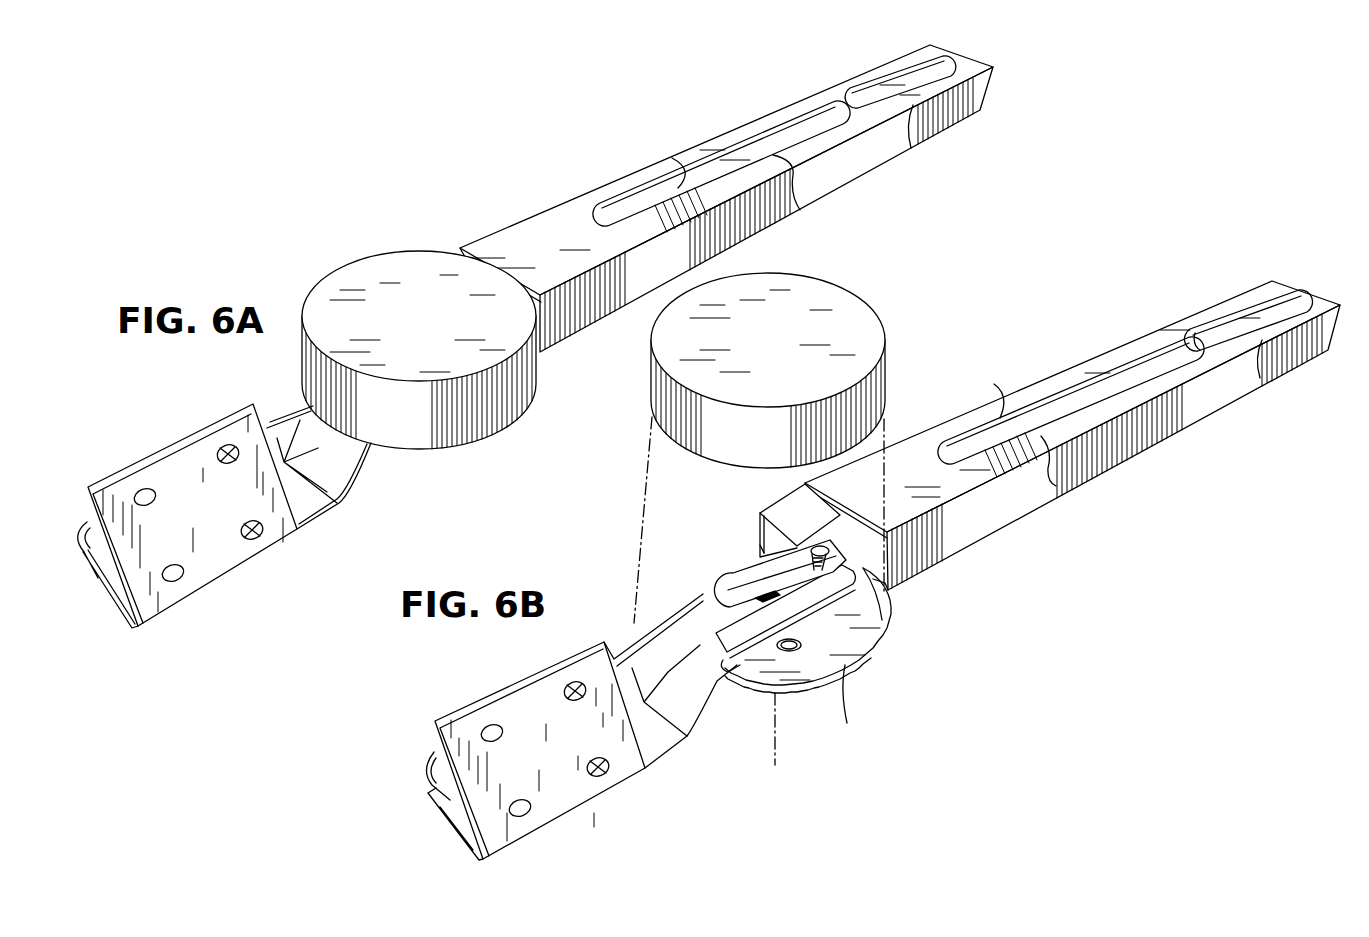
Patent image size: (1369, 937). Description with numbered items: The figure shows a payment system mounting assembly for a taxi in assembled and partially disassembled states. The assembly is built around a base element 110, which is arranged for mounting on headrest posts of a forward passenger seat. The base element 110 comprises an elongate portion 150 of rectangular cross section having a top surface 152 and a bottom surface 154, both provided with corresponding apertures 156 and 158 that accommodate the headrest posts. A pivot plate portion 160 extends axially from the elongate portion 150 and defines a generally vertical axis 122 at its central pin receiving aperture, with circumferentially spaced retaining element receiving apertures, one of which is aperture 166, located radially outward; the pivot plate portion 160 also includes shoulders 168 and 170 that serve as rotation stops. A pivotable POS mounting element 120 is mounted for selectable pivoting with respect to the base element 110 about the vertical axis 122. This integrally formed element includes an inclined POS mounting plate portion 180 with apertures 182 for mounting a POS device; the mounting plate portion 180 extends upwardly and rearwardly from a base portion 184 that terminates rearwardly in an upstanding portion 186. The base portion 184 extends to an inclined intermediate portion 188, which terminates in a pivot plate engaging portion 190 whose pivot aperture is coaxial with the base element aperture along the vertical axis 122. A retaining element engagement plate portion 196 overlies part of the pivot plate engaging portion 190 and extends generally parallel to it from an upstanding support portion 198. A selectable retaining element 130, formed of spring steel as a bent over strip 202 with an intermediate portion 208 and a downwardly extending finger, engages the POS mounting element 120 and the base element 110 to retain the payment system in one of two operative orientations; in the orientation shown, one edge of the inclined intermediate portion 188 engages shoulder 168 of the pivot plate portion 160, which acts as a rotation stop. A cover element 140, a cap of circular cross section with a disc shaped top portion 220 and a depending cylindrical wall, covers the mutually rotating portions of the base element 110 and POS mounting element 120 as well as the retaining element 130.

In FIG. 6A, the base element 110 is at (726, 193).
In FIG. 6B, the base element 110 is at (1072, 461).
In FIG. 6A, the pivotable POS mounting element 120 is at (231, 491).
In FIG. 6B, the pivotable POS mounting element 120 is at (676, 685).
In FIG. 6B, the vertical axis 122 is at (775, 731).
In FIG. 6B, the selectable retaining element 130 is at (785, 552).
In FIG. 6A, the cover element 140 is at (397, 315).
In FIG. 6B, the cover element 140 is at (804, 370).
In FIG. 6A, the elongate portion 150 is at (815, 92).
In FIG. 6B, the elongate portion 150 is at (1180, 321).
In FIG. 6A, the top surface 152 is at (507, 263).
In FIG. 6B, the top surface 152 is at (860, 492).
In FIG. 6B, the bottom surface 154 is at (876, 582).
In FIG. 6A, the apertures 156 is at (672, 158).
In FIG. 6B, the apertures 156 is at (994, 398).
In FIG. 6A, the apertures 158 is at (868, 98).
In FIG. 6B, the apertures 158 is at (1238, 327).
In FIG. 6B, the pivot plate portion 160 is at (808, 656).
In FIG. 6B, the retaining element receiving aperture 166 is at (853, 637).
In FIG. 6B, the shoulder 168 is at (748, 660).
In FIG. 6B, the shoulder 170 is at (753, 559).
In FIG. 6A, the inclined POS mounting plate portion 180 is at (178, 462).
In FIG. 6B, the inclined POS mounting plate portion 180 is at (498, 694).
In FIG. 6A, the apertures 182 is at (252, 535).
In FIG. 6B, the apertures 182 is at (590, 775).
In FIG. 6A, the base portion 184 is at (107, 575).
In FIG. 6B, the base portion 184 is at (441, 812).
In FIG. 6A, the upstanding portion 186 is at (87, 522).
In FIG. 6B, the upstanding portion 186 is at (430, 762).
In FIG. 6A, the inclined intermediate portion 188 is at (303, 420).
In FIG. 6B, the inclined intermediate portion 188 is at (684, 656).
In FIG. 6B, the pivot plate engaging portion 190 is at (870, 580).
In FIG. 6B, the retaining element engagement plate portion 196 is at (776, 512).
In FIG. 6B, the upstanding support portion 198 is at (760, 552).
In FIG. 6B, the bent over strip 202 is at (803, 648).
In FIG. 6B, the intermediate portion 208 is at (700, 581).
In FIG. 6A, the disc shaped top portion 220 is at (333, 292).
In FIG. 6B, the disc shaped top portion 220 is at (845, 334).